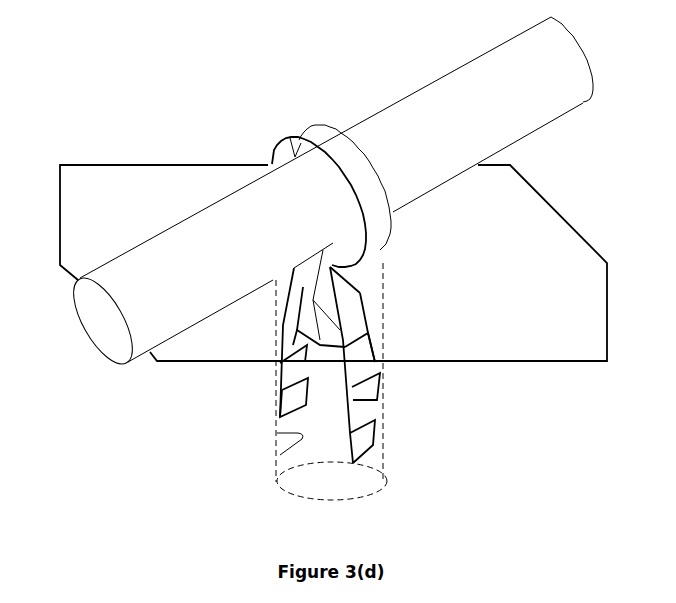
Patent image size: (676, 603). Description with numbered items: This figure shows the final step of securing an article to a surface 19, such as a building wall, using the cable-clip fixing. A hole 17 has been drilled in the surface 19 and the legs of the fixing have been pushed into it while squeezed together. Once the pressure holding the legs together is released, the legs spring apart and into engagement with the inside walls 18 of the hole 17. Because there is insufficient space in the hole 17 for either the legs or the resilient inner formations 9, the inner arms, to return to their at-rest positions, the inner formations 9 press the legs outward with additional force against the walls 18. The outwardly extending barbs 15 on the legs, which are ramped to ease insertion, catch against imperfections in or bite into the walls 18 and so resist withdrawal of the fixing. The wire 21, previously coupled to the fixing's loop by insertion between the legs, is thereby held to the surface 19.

The inner formation 9 is at (275, 358).
The barb 15 is at (372, 379).
The hole 17 is at (357, 478).
The inside wall 18 is at (303, 435).
The surface 19 is at (125, 193).
The wire 21 is at (462, 80).